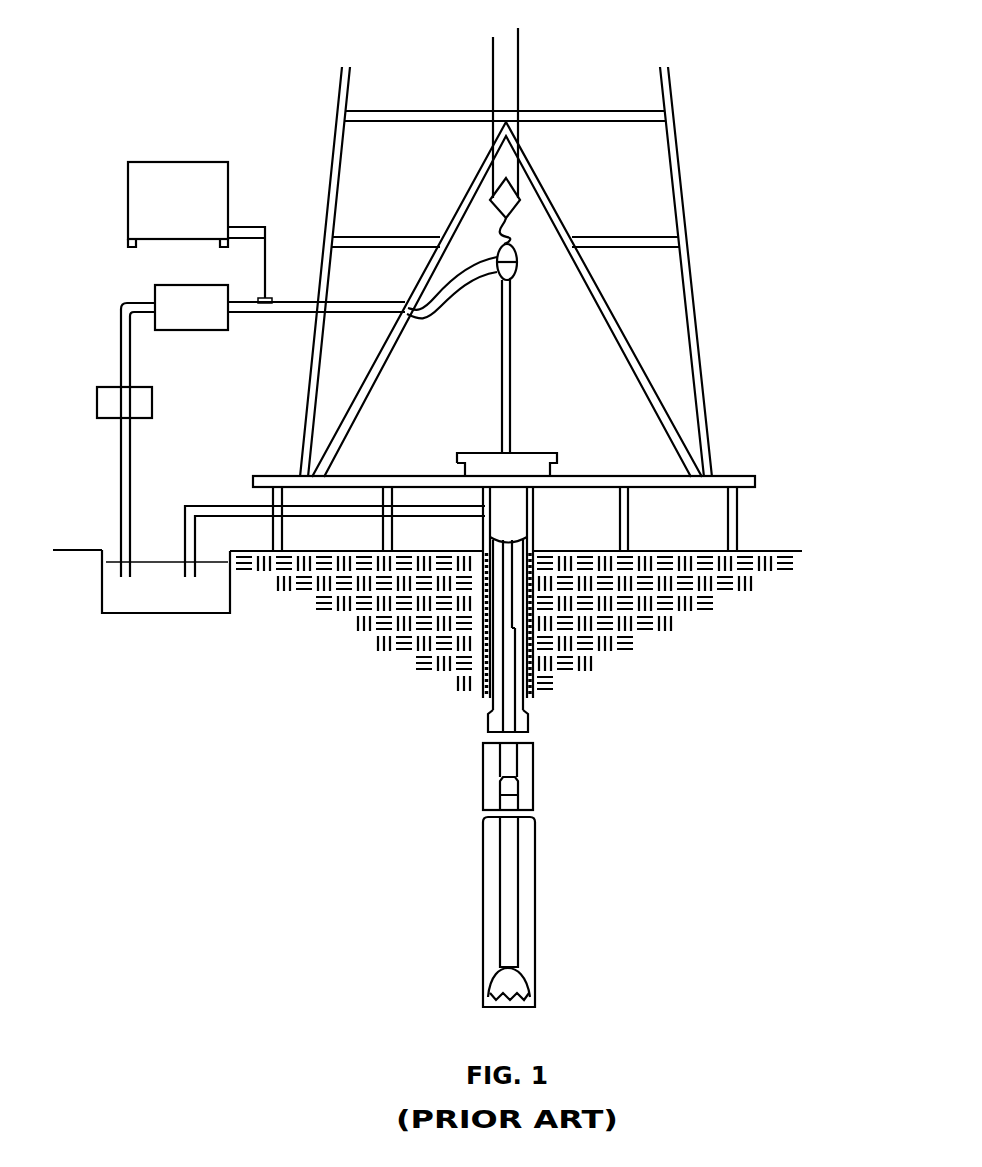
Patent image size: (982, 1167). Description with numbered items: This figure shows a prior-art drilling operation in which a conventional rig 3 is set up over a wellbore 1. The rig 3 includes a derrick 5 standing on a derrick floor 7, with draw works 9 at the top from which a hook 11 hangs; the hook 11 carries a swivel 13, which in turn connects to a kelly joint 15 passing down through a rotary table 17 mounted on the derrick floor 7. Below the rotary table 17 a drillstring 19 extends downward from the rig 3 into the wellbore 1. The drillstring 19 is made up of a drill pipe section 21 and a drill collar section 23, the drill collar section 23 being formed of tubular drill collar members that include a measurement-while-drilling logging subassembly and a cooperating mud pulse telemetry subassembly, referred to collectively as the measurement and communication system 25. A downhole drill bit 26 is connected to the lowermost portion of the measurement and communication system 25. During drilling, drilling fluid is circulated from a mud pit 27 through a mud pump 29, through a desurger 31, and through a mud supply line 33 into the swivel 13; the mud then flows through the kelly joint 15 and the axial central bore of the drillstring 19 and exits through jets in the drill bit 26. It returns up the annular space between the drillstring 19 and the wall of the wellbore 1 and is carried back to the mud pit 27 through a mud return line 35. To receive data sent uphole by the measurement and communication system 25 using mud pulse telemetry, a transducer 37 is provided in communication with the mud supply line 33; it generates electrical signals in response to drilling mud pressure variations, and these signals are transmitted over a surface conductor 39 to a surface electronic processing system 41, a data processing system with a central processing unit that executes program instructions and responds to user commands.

The wellbore 1 is at (485, 716).
The rig 3 is at (543, 272).
The derrick 5 is at (703, 330).
The derrick floor 7 is at (738, 474).
The draw works 9 is at (518, 29).
The hook 11 is at (514, 222).
The swivel 13 is at (488, 280).
The kelly joint 15 is at (511, 342).
The rotary table 17 is at (533, 452).
The drillstring 19 is at (515, 707).
The drill pipe section 21 is at (517, 762).
The drill collar section 23 is at (518, 787).
The measurement and communication system 25 is at (522, 855).
The downhole drill bit 26 is at (530, 968).
The mud pit 27 is at (197, 613).
The mud pump 29 is at (107, 387).
The desurger 31 is at (187, 286).
The mud supply line 33 is at (406, 317).
The mud return line 35 is at (400, 518).
The transducer 37 is at (273, 299).
The surface conductor 39 is at (257, 227).
The surface electronic processing system 41 is at (138, 162).